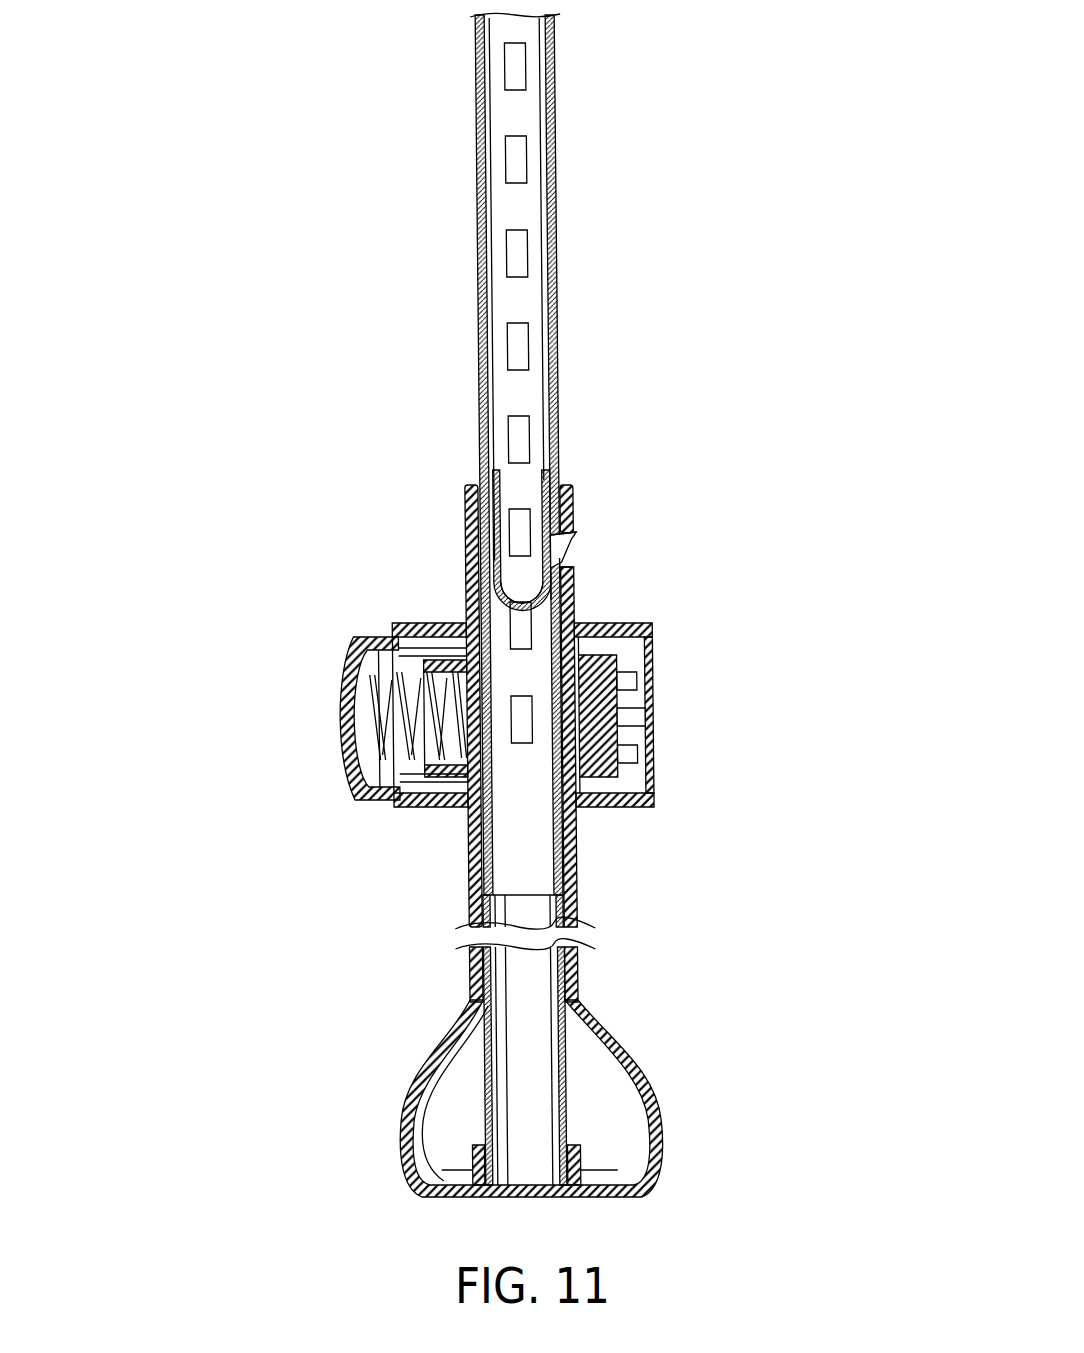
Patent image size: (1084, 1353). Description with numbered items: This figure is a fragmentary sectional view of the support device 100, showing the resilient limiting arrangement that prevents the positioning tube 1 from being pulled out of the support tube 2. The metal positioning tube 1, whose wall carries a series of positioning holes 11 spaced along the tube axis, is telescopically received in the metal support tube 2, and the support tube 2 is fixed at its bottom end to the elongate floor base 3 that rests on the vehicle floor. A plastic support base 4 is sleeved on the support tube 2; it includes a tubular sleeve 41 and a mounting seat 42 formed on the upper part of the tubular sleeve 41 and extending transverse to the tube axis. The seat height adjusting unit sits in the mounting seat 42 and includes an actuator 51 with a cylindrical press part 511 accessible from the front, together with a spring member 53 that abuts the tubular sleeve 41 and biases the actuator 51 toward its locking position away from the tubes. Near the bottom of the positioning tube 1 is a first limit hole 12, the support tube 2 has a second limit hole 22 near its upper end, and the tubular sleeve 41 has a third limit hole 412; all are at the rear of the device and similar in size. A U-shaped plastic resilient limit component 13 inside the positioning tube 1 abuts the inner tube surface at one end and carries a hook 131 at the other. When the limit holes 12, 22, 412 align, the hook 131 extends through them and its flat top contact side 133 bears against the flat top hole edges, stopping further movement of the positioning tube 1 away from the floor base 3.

The support device 100 is at (438, 136).
The positioning tube 1 is at (568, 272).
The positioning holes 11 is at (517, 160).
The first limit hole 12 is at (575, 560).
The resilient limit component 13 is at (502, 573).
The hook 131 is at (575, 553).
The flat top contact side 133 is at (573, 529).
The support tube 2 is at (567, 483).
The second limit hole 22 is at (575, 565).
The floor base 3 is at (398, 1121).
The support base 4 is at (680, 948).
The tubular sleeve 41 is at (465, 520).
The third limit hole 412 is at (573, 572).
The mounting seat 42 is at (618, 810).
The actuator 51 is at (364, 822).
The press part 511 is at (336, 720).
The spring member 53 is at (380, 695).